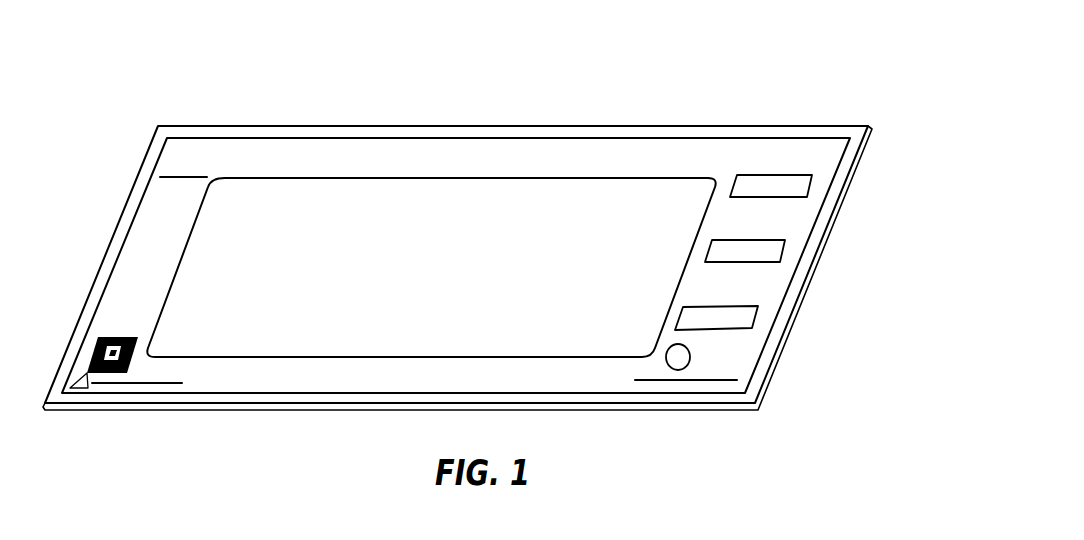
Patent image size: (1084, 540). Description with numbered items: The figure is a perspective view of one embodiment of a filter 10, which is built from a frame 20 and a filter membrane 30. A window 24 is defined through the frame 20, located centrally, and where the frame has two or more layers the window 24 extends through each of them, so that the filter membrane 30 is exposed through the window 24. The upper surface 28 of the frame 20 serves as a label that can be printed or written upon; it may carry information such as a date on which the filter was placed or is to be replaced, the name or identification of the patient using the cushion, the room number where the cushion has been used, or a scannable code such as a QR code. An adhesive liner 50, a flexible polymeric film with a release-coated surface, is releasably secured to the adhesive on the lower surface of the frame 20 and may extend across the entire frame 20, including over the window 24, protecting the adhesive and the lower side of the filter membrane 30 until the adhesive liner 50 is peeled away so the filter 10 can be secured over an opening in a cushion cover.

The filter 10 is at (494, 210).
The frame 20 is at (787, 220).
The window 24 is at (600, 178).
The upper surface 28 is at (770, 292).
The filter membrane 30 is at (267, 203).
The adhesive liner 50 is at (770, 347).